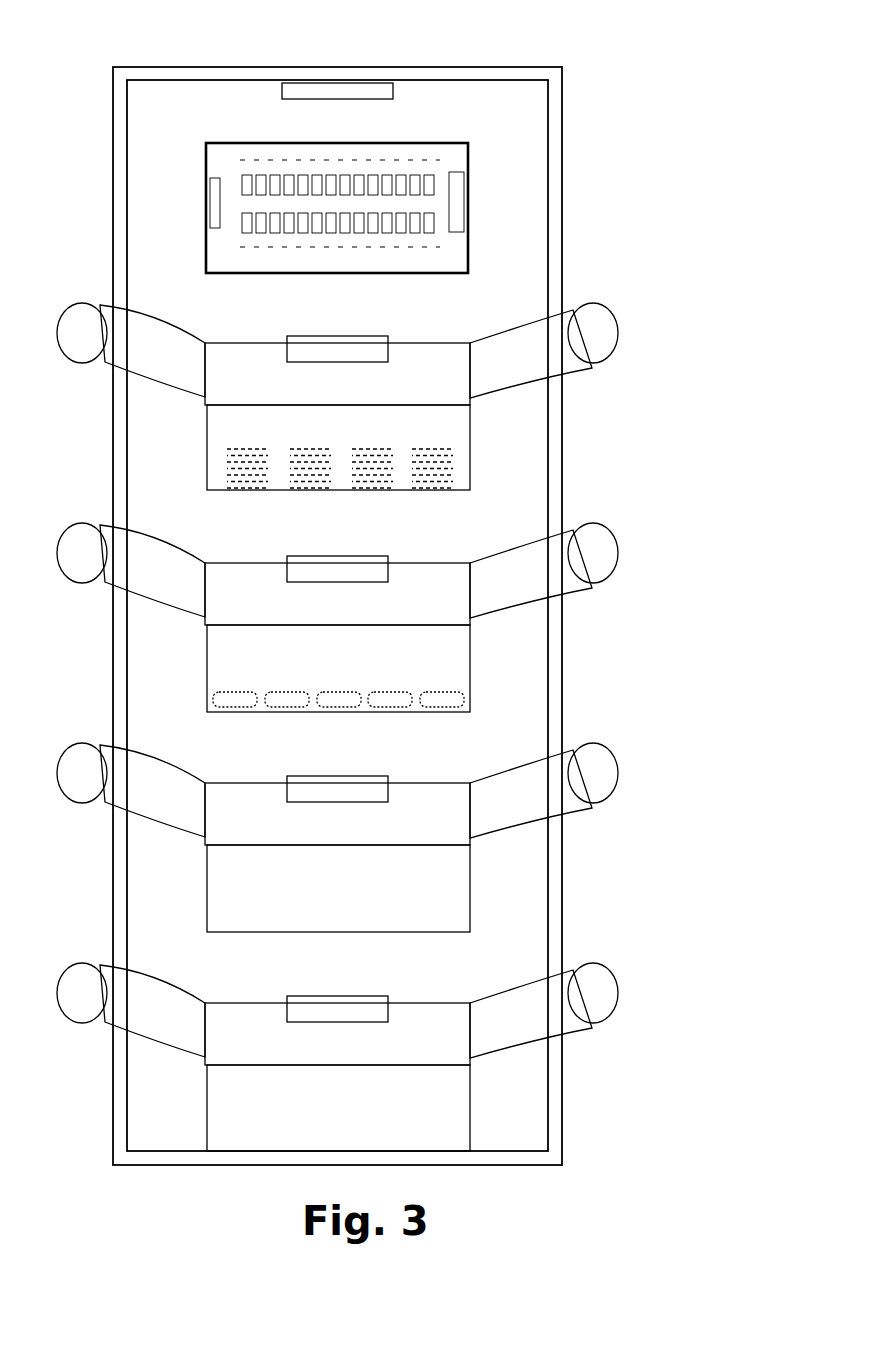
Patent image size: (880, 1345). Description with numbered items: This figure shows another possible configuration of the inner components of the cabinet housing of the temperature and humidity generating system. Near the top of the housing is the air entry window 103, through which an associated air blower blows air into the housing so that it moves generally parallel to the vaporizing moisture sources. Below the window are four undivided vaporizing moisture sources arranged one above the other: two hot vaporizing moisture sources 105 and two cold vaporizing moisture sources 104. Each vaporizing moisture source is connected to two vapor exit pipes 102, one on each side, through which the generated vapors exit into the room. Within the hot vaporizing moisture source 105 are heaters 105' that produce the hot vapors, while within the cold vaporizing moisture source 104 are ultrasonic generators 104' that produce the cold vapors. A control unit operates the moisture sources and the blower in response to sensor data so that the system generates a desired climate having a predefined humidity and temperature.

The vapor exit pipe 102 is at (620, 337).
The air entry window 103 is at (308, 88).
The cold vaporizing moisture source 104 is at (366, 916).
The ultrasonic generator 104' is at (367, 725).
The hot vaporizing moisture source 105 is at (332, 698).
The heater 105' is at (395, 496).